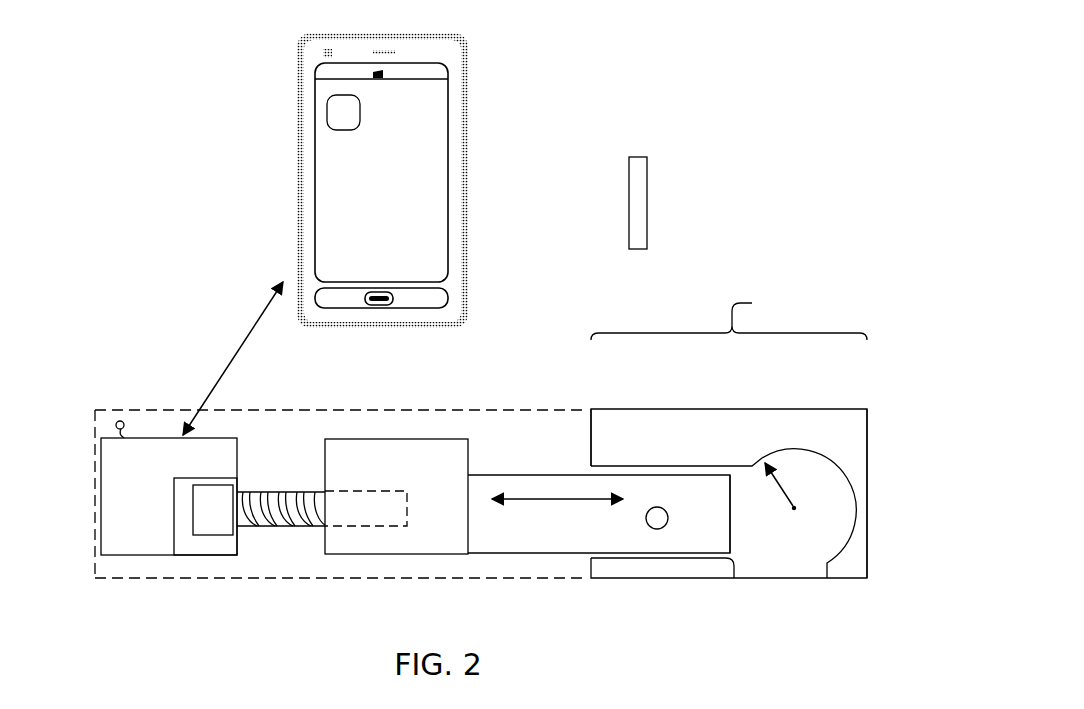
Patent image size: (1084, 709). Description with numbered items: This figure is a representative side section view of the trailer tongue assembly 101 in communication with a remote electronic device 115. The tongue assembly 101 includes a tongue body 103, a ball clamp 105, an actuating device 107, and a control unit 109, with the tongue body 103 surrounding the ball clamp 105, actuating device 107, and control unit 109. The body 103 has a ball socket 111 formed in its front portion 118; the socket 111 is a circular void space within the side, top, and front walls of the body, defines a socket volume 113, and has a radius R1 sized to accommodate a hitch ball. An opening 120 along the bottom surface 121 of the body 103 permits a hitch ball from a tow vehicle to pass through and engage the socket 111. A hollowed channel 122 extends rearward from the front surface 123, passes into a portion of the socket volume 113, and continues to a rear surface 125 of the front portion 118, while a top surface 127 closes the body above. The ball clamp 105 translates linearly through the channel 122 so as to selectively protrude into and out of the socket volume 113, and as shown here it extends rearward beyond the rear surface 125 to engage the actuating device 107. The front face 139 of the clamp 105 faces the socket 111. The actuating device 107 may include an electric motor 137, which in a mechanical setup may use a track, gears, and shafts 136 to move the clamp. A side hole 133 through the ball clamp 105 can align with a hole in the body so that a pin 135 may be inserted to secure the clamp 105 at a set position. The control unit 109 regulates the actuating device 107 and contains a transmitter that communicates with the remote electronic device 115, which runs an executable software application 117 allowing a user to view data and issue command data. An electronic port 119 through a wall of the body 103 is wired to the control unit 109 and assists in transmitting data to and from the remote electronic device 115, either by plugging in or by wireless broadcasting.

The tongue assembly 101 is at (766, 134).
The tongue body 103 is at (336, 580).
The ball clamp 105 is at (364, 480).
The actuating device 107 is at (192, 540).
The control unit 109 is at (118, 519).
The ball socket 111 is at (858, 475).
The socket volume 113 is at (833, 513).
The remote electronic device 115 is at (361, 235).
The executable software application 117 is at (343, 122).
The front portion 118 is at (729, 313).
The electronic port 119 is at (118, 421).
The opening 120 is at (786, 590).
The bottom surface 121 is at (702, 580).
The hollowed channel 122 is at (644, 466).
The front surface 123 is at (867, 432).
The rear surface 125 is at (590, 428).
The top surface 127 is at (640, 409).
The side hole 133 is at (668, 518).
The pin 135 is at (647, 205).
The shafts 136 is at (305, 527).
The electric motor 137 is at (215, 498).
The front face 139 is at (731, 503).
The radius R1 is at (779, 480).